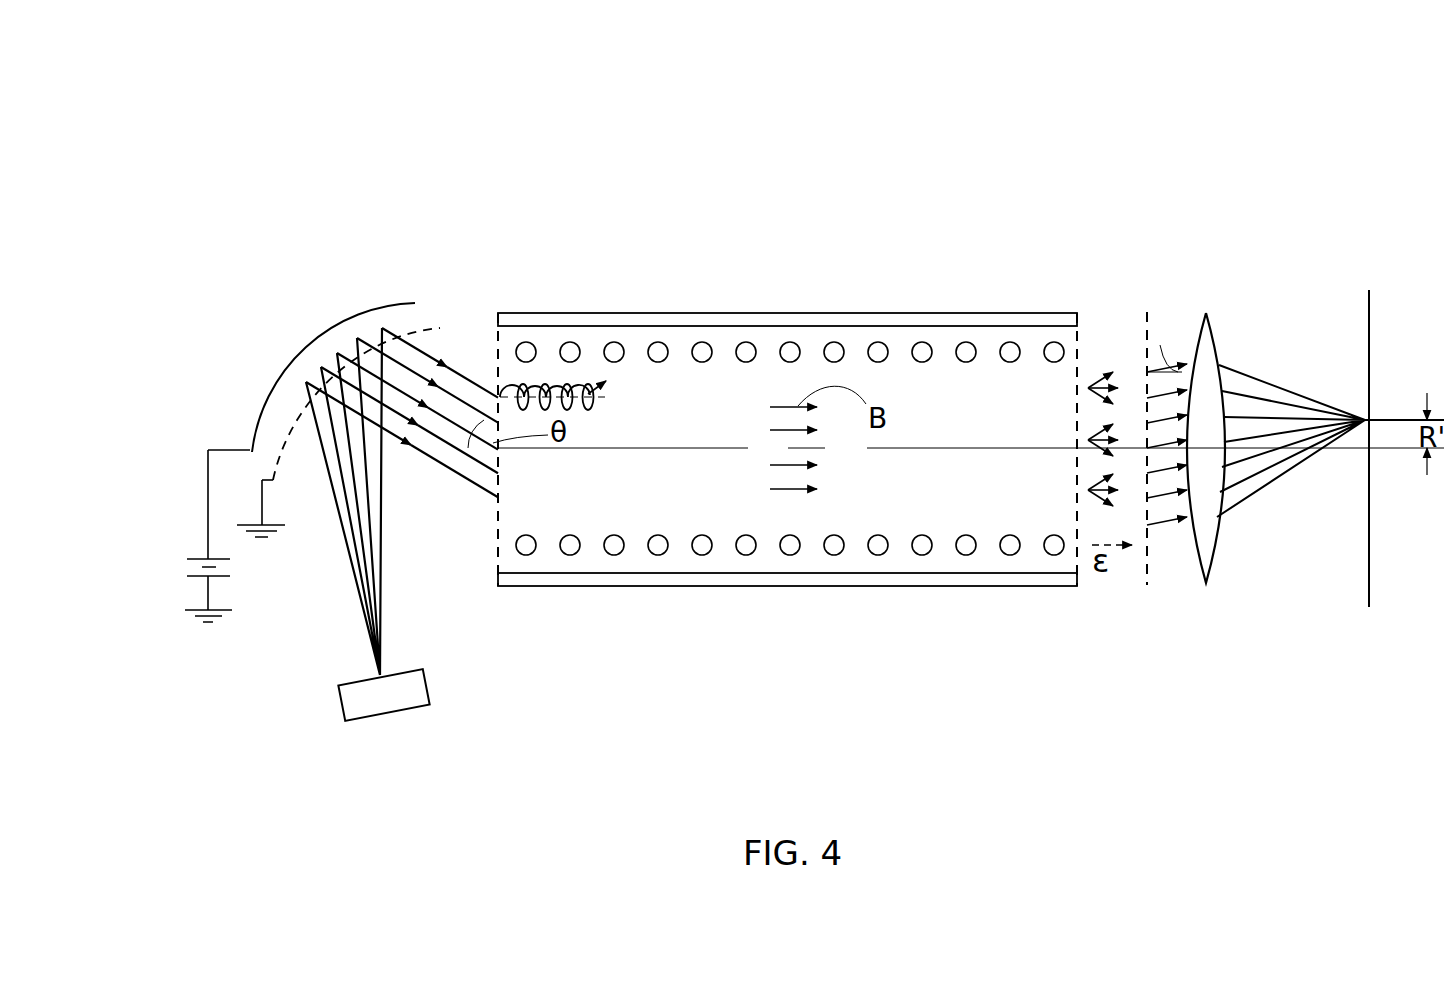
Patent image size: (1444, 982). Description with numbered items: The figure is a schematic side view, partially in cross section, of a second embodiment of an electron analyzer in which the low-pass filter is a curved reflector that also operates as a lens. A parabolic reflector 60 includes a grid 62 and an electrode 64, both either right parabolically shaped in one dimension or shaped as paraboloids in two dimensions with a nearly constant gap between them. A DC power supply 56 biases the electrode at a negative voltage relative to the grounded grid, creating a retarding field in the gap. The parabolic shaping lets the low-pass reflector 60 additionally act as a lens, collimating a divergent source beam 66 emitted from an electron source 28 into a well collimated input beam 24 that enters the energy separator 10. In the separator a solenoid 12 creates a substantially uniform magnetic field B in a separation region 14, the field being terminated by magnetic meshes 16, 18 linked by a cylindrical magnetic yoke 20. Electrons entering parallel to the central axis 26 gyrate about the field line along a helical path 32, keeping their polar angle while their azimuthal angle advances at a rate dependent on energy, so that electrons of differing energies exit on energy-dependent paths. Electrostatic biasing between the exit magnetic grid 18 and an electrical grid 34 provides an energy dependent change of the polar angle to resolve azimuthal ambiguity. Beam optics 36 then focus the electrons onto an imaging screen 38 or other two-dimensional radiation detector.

The energy separator 10 is at (690, 213).
The solenoid 12 is at (830, 348).
The separation region 14 is at (908, 503).
The magnetic input mesh 16 is at (503, 465).
The exit magnetic mesh 18 is at (1080, 352).
The cylindrical magnetic yoke 20 is at (748, 313).
The collimated input beam 24 is at (458, 468).
The central axis 26 is at (711, 448).
The electron source 28 is at (430, 687).
The helical path 32 is at (556, 384).
The electrical grid 34 is at (1148, 582).
The beam optics 36 is at (1212, 340).
The imaging screen 38 is at (1371, 323).
The DC power supply 56 is at (195, 550).
The parabolic reflector 60 is at (452, 210).
The grid 62 is at (423, 328).
The electrode 64 is at (375, 308).
The divergent source beam 66 is at (362, 548).